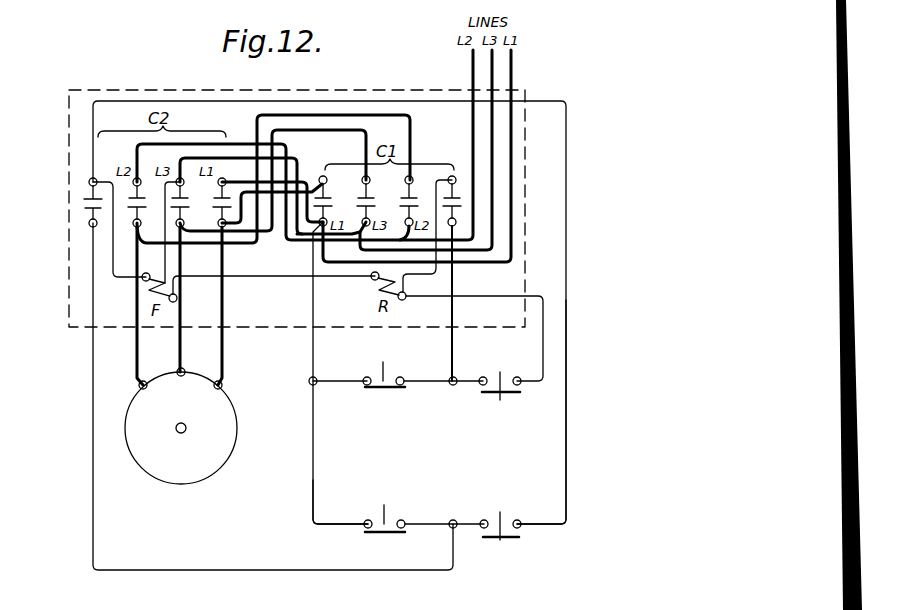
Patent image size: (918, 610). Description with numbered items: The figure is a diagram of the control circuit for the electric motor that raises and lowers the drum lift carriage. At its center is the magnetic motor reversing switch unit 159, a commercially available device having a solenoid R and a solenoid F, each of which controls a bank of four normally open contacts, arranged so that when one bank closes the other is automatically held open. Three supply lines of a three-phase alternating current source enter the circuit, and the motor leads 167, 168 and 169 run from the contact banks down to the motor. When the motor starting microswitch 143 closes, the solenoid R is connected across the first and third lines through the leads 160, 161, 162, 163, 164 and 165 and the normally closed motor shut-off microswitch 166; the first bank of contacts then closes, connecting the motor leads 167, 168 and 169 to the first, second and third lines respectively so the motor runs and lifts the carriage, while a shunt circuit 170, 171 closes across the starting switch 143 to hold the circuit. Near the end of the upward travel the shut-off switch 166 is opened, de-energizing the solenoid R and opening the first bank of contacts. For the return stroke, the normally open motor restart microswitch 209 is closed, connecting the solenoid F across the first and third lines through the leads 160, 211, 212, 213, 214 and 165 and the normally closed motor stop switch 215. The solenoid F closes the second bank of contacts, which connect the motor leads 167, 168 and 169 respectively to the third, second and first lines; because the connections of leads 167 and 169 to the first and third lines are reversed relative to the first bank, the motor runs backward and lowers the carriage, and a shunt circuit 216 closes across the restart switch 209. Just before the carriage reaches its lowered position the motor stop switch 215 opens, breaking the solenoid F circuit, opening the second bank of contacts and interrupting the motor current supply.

The magnetic motor reversing switch unit 159 is at (68, 192).
The lead 214 is at (113, 252).
The lead 165 is at (168, 262).
The lead 164 is at (343, 278).
The shunt circuit lead 171 is at (436, 275).
The lead 163 is at (543, 352).
The shunt circuit lead 170 is at (452, 352).
The lead 160 is at (313, 372).
The lead 161 is at (344, 385).
The motor shut-off microswitch 166 is at (388, 389).
The lead 162 is at (440, 385).
The microswitch 143 is at (500, 400).
The shunt circuit 216 is at (93, 447).
The lead 213 is at (566, 450).
The lead 211 is at (313, 495).
The lead 212 is at (428, 522).
The motor stop switch 215 is at (388, 534).
The motor restart microswitch 209 is at (500, 541).
The motor lead 168 is at (137, 355).
The motor lead 167 is at (180, 355).
The motor lead 169 is at (222, 355).